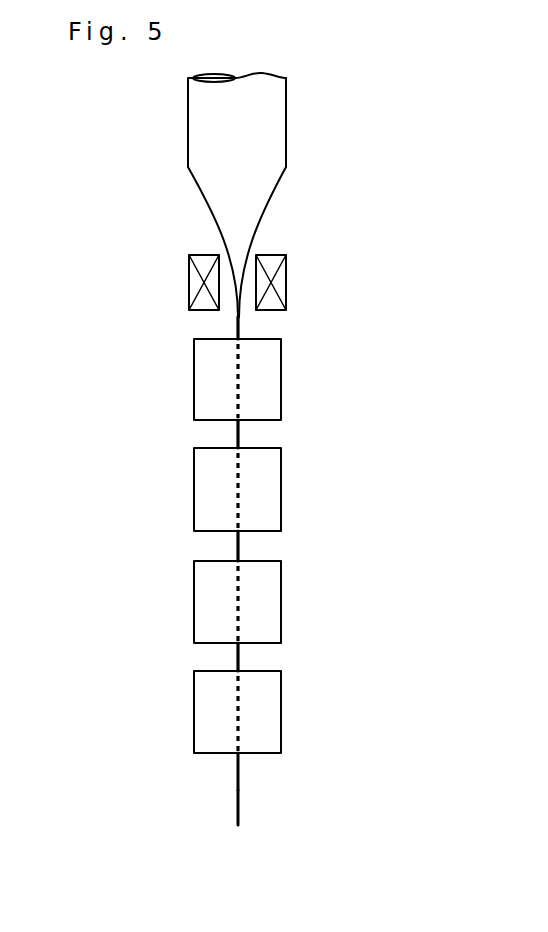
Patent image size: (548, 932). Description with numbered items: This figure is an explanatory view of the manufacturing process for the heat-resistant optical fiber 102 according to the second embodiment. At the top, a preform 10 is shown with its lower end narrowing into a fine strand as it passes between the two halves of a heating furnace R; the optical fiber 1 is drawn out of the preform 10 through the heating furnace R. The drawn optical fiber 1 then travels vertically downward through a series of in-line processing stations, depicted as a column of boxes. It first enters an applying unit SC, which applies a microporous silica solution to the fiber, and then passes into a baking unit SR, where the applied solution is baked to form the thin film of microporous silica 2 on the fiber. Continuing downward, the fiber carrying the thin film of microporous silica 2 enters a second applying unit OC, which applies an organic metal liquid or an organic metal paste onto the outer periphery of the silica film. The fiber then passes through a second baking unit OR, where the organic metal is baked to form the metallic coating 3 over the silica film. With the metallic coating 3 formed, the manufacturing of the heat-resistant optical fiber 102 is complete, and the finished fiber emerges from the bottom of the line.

The preform 10 is at (202, 108).
The heating furnace R is at (189, 284).
The optical fiber 1 is at (242, 327).
The applying unit SC is at (202, 390).
The baking unit SR is at (202, 505).
The thin film of microporous silica 2 is at (242, 543).
The applying unit OC is at (202, 613).
The baking unit OR is at (202, 728).
The metallic coating 3 is at (242, 769).
The heat-resistant optical fiber 102 is at (235, 807).